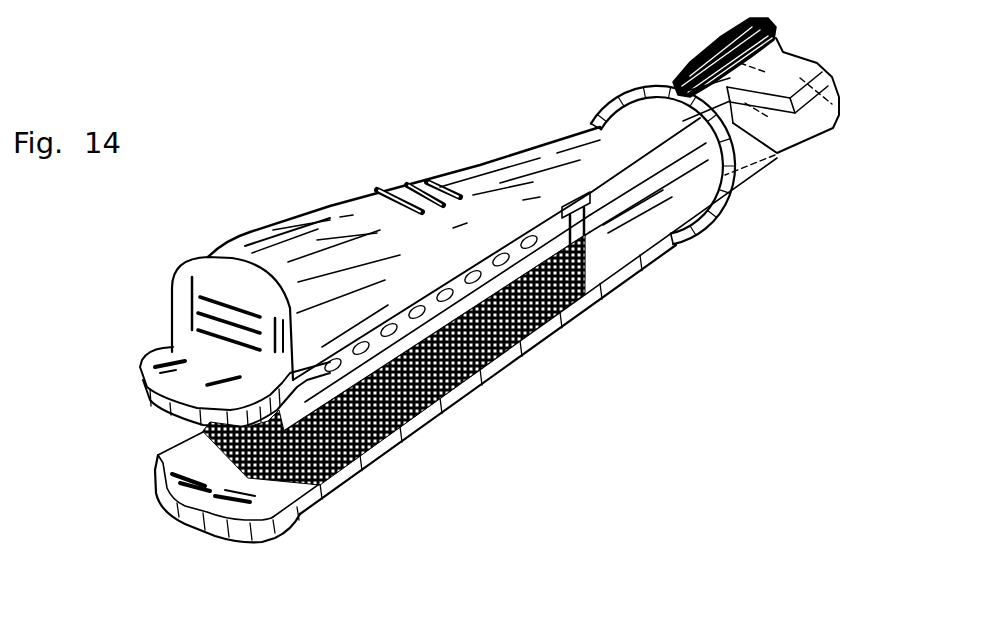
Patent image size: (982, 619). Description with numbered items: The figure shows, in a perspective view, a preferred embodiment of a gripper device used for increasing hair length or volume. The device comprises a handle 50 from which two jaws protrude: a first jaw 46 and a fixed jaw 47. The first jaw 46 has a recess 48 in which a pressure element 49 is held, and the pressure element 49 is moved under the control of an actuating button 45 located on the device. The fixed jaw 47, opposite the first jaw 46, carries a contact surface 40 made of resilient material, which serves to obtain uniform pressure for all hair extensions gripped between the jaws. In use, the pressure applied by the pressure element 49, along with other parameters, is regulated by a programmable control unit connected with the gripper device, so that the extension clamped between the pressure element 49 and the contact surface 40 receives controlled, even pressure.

The contact surface 40 is at (487, 363).
The actuating button 45 is at (727, 44).
The first jaw 46 is at (173, 398).
The fixed jaw 47 is at (175, 519).
The recess 48 is at (326, 491).
The pressure element 49 is at (397, 433).
The handle 50 is at (776, 156).